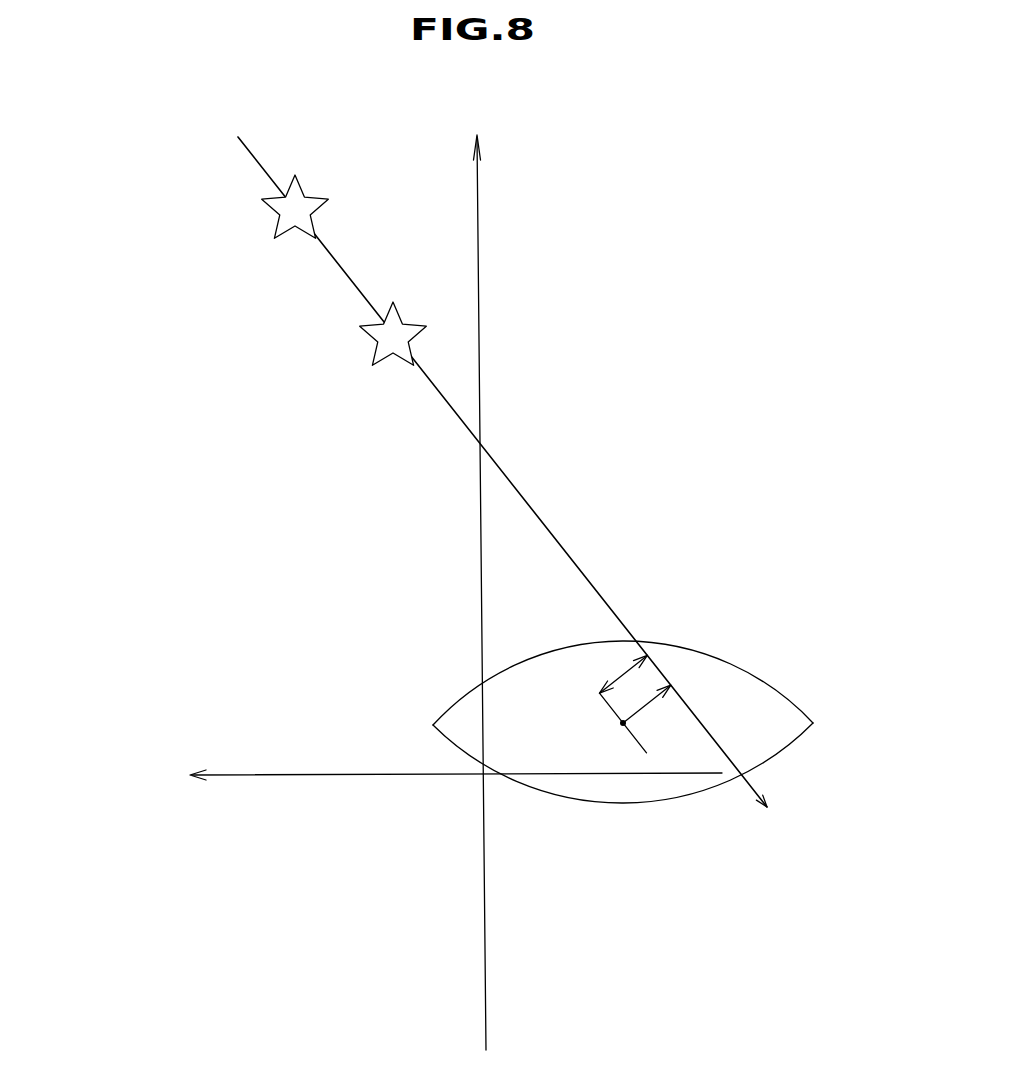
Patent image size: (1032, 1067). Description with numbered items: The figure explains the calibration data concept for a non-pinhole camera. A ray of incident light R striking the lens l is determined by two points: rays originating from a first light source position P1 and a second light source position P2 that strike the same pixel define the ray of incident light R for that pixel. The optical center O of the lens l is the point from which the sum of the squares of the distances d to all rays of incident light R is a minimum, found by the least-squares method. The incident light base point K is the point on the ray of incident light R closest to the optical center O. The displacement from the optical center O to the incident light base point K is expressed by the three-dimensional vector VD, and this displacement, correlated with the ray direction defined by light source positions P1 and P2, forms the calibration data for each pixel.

The first light source position P1 is at (293, 229).
The second light source position P2 is at (371, 352).
The ray of incident light R is at (355, 283).
The optical center O is at (620, 722).
The incident light base point K is at (672, 683).
The distance d is at (624, 673).
The lens l is at (560, 797).
The three-dimensional vector VD is at (643, 710).